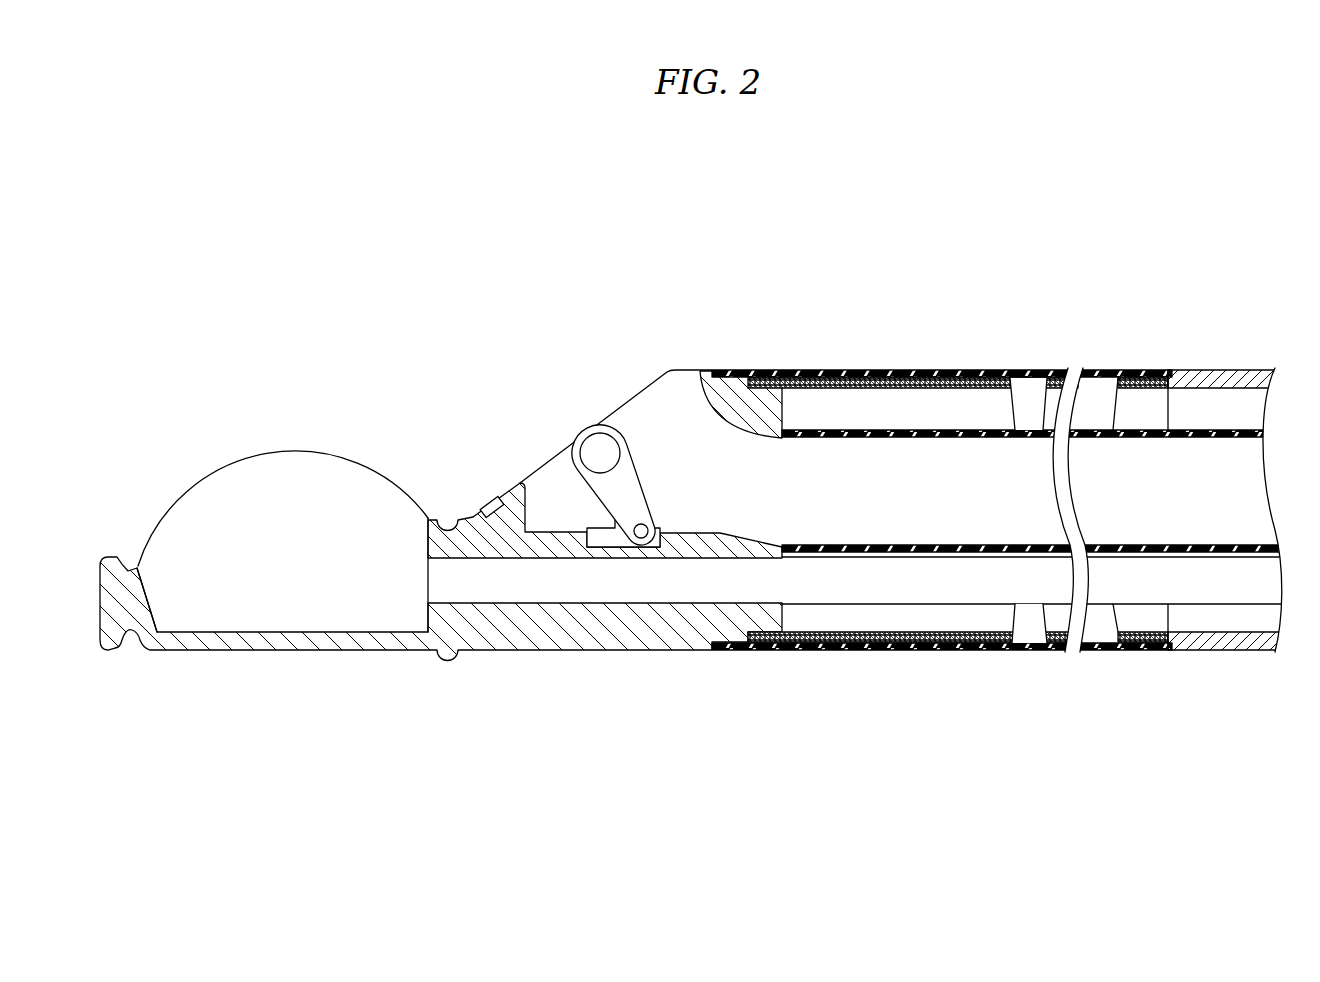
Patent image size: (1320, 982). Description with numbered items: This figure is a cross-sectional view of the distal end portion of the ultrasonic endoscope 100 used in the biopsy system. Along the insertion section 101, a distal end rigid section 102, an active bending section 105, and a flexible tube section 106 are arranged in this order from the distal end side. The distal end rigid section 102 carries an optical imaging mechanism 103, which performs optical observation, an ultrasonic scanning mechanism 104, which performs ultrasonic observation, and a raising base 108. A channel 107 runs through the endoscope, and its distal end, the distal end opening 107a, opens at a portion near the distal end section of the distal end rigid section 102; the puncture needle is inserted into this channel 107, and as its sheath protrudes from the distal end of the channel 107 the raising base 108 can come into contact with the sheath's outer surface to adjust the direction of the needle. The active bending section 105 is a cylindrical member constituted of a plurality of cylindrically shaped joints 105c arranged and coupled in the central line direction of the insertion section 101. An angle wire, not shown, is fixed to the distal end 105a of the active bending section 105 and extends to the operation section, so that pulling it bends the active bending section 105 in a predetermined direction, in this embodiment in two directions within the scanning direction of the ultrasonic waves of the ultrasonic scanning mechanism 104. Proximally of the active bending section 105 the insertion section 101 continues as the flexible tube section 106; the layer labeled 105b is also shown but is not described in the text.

The ultrasonic endoscope 100 is at (335, 245).
The insertion section 101 is at (677, 236).
The distal end rigid section 102 is at (673, 395).
The optical imaging mechanism 103 is at (497, 503).
The ultrasonic scanning mechanism 104 is at (193, 482).
The active bending section 105 is at (862, 365).
The distal end of the active bending section 105a is at (920, 622).
The outer layer of flexible tube 105b is at (1142, 622).
The joints 105c is at (935, 405).
The flexible tube section 106 is at (1200, 380).
The channel 107 is at (648, 418).
The distal end opening 107a is at (653, 377).
The raising base 108 is at (602, 485).